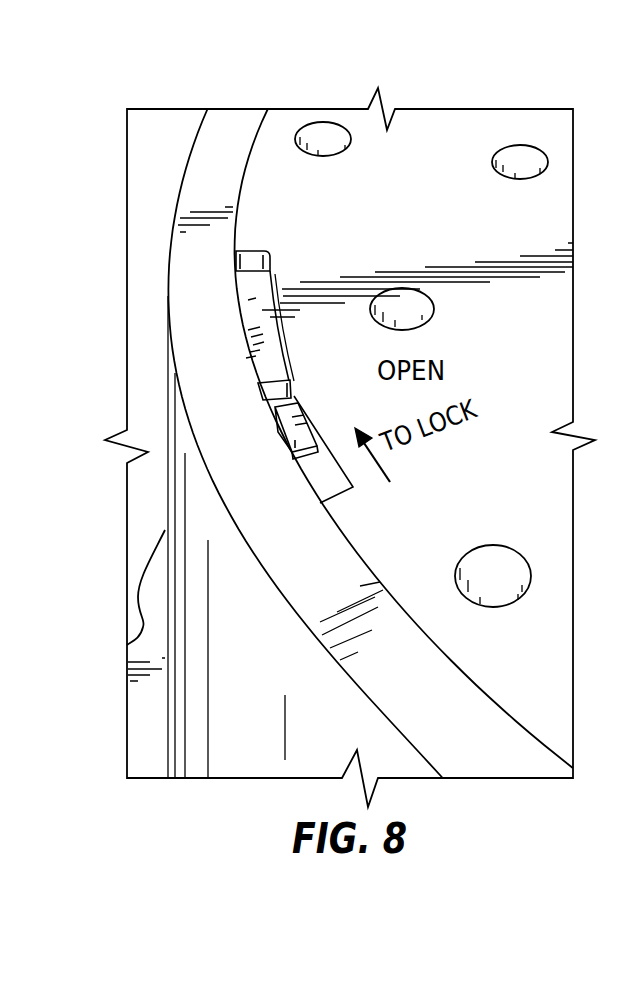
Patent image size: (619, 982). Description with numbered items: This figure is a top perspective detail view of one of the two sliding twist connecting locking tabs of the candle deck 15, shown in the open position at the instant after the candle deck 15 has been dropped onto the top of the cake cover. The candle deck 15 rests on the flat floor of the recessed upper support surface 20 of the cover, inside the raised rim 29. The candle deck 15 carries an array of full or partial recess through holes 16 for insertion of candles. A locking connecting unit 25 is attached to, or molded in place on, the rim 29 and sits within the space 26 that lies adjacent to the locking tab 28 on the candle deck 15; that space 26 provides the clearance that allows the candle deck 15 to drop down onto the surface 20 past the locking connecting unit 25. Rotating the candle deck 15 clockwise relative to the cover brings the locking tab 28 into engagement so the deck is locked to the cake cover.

The candle deck 15 is at (528, 483).
The recess through holes 16 is at (325, 135).
The recessed upper support surface 20 is at (320, 490).
The locking connecting unit 25 is at (249, 303).
The space 26 is at (289, 363).
The locking tab 28 is at (303, 438).
The raised rim 29 is at (227, 138).